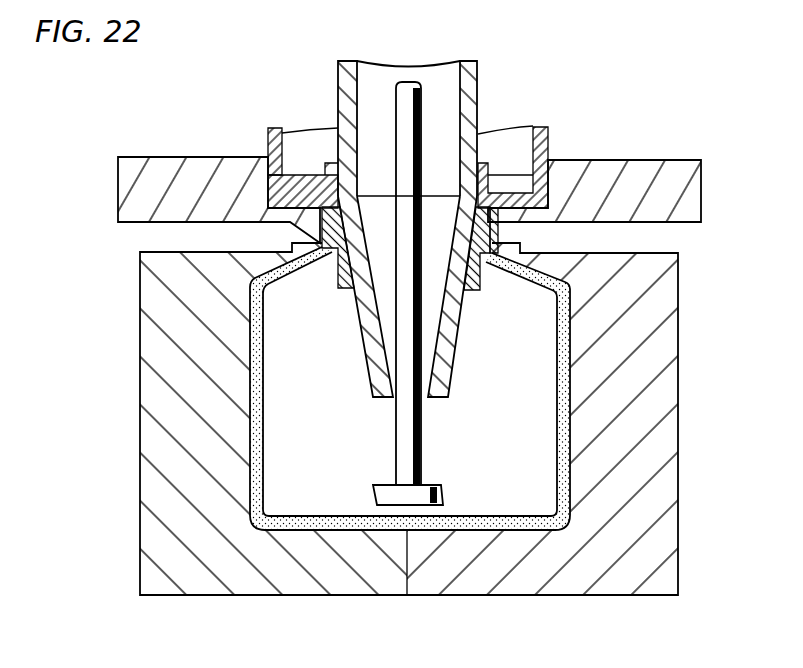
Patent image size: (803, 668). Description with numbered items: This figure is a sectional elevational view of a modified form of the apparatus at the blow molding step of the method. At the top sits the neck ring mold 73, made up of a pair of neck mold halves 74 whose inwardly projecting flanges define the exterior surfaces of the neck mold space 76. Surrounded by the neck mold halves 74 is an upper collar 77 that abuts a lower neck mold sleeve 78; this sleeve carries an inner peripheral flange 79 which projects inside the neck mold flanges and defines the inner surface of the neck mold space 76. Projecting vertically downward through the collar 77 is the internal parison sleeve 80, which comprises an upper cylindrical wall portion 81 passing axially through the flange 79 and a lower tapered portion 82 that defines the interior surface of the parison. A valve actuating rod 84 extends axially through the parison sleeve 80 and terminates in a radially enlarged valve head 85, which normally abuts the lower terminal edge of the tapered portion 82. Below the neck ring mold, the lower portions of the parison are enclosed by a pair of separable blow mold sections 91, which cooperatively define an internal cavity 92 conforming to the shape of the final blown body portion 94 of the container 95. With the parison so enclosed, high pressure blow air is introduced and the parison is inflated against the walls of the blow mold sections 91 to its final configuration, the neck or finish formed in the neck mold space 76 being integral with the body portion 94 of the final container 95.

The neck ring mold 73 is at (440, 185).
The neck mold halves 74 is at (191, 163).
The neck mold space 76 is at (480, 223).
The upper collar 77 is at (285, 137).
The lower neck mold sleeve 78 is at (284, 189).
The inner peripheral flange 79 is at (337, 194).
The internal parison sleeve 80 is at (411, 210).
The upper cylindrical wall portion 81 is at (467, 58).
The lower tapered portion 82 is at (370, 337).
The valve actuating rod 84 is at (404, 141).
The valve head 85 is at (443, 488).
The blow mold sections 91 is at (145, 413).
The internal cavity 92 is at (567, 470).
The body portion of the container 94 is at (573, 352).
The final container 95 is at (501, 228).